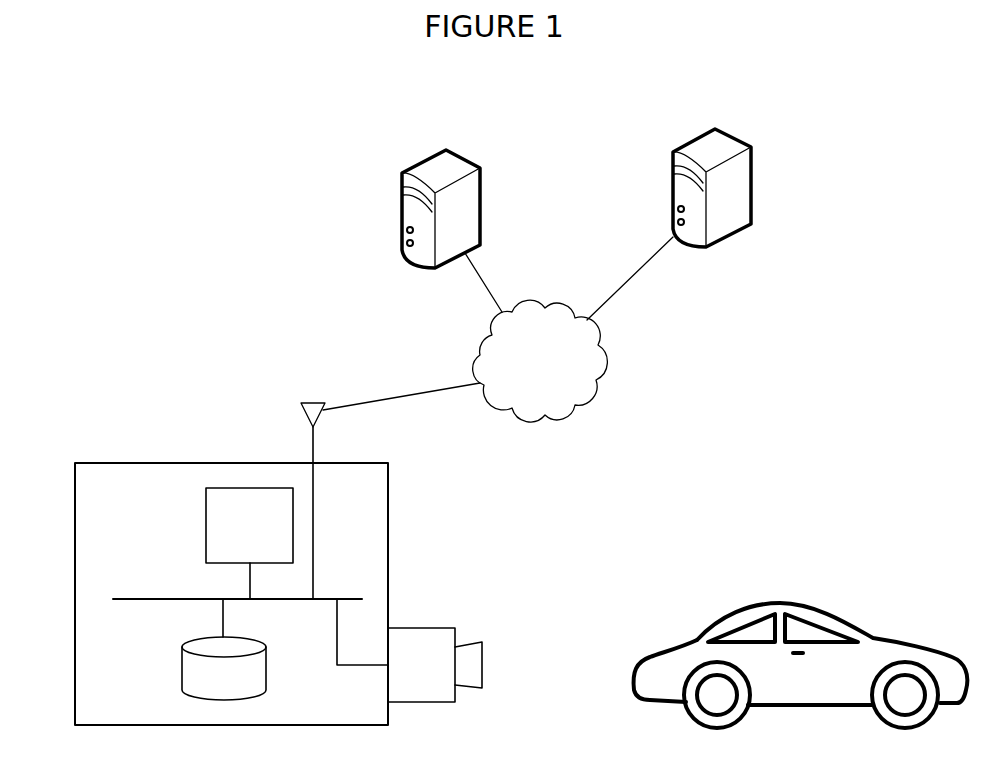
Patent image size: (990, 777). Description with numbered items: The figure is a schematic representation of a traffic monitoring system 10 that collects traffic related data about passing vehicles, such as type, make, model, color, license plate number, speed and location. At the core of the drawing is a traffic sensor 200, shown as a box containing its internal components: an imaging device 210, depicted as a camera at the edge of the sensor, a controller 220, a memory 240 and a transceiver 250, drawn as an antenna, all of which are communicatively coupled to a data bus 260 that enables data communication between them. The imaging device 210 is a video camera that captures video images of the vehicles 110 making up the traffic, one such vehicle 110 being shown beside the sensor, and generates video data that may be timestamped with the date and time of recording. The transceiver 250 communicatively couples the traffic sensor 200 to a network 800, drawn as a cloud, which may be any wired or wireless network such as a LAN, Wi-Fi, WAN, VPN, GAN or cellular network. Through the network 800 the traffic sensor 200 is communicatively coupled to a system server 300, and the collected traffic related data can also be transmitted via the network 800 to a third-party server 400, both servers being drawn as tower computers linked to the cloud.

The traffic monitoring system 10 is at (148, 272).
The vehicle 110 is at (702, 637).
The traffic sensor 200 is at (118, 461).
The imaging device 210 is at (409, 650).
The controller 220 is at (249, 543).
The memory 240 is at (224, 649).
The transceiver 250 is at (305, 400).
The data bus 260 is at (142, 597).
The system server 300 is at (400, 213).
The third-party server 400 is at (672, 195).
The network 800 is at (540, 361).